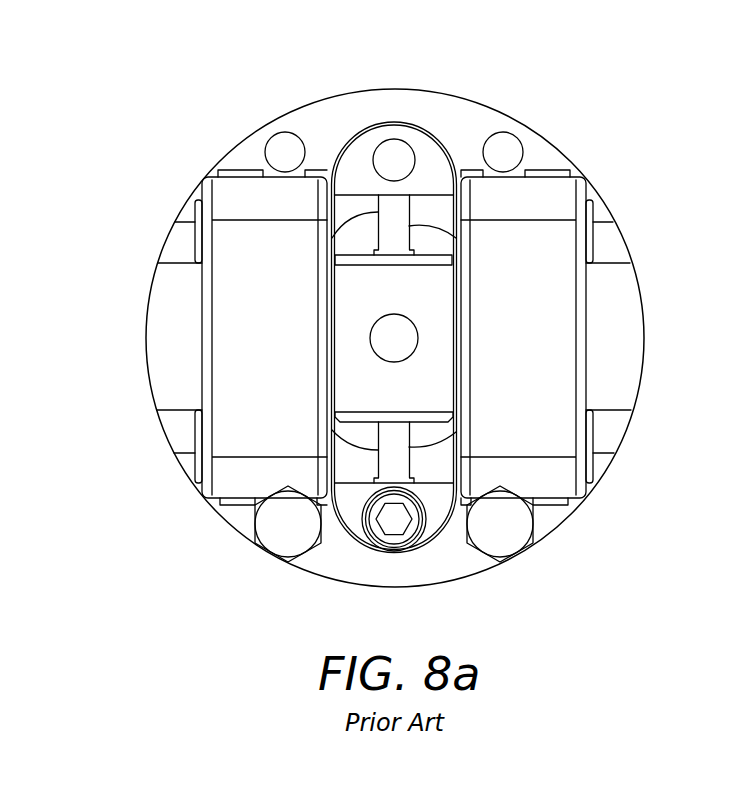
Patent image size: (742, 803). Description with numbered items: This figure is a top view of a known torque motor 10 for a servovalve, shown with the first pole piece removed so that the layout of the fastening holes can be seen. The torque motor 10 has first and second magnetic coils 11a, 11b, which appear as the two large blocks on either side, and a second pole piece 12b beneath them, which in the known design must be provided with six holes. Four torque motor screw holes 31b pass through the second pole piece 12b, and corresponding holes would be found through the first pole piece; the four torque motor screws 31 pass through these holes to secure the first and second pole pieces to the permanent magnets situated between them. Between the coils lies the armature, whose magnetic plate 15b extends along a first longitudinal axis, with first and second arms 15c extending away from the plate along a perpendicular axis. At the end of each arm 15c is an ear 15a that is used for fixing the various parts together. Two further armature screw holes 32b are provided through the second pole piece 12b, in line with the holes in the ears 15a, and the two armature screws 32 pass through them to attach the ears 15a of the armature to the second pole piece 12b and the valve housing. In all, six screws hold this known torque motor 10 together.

The torque motor 10 is at (456, 66).
The first magnetic coil 11a is at (240, 193).
The second magnetic coil 11b is at (547, 193).
The second pole piece 12b is at (177, 238).
The ear 15a is at (355, 156).
The magnetic plate 15b is at (157, 338).
The arm 15c is at (332, 240).
The torque motor screw 31 is at (275, 543).
The torque motor screw hole 31b is at (280, 142).
The armature screw 32 is at (397, 543).
The armature screw hole 32b is at (394, 152).